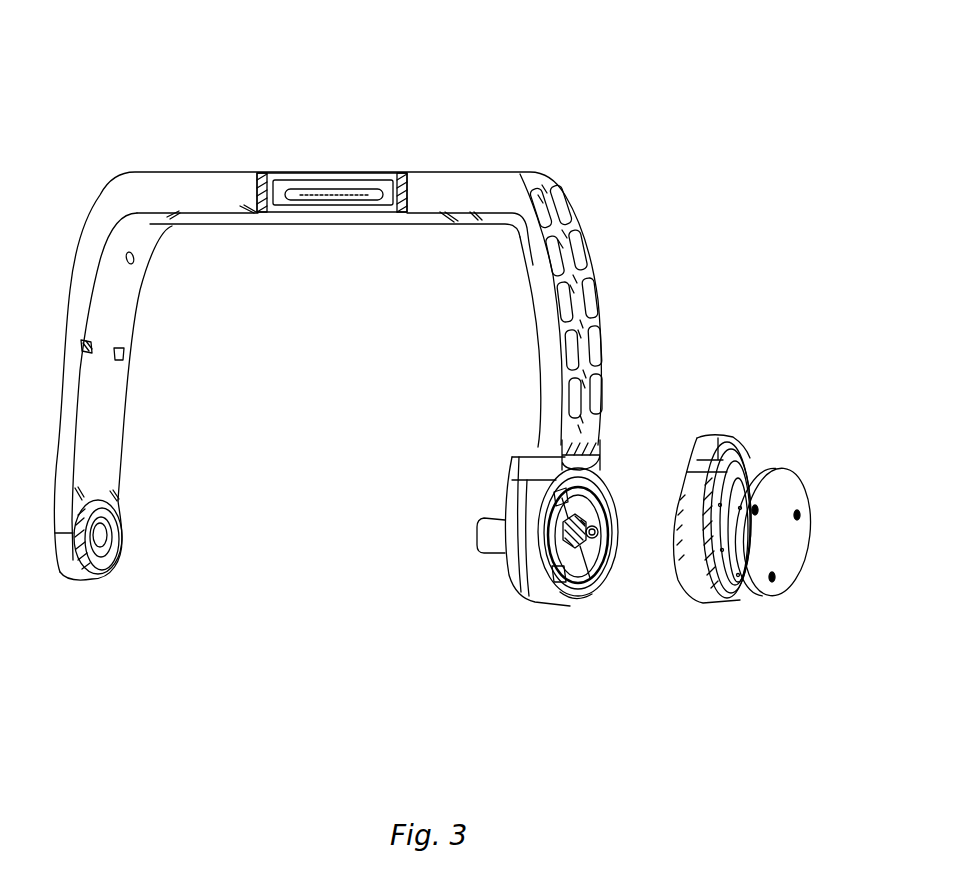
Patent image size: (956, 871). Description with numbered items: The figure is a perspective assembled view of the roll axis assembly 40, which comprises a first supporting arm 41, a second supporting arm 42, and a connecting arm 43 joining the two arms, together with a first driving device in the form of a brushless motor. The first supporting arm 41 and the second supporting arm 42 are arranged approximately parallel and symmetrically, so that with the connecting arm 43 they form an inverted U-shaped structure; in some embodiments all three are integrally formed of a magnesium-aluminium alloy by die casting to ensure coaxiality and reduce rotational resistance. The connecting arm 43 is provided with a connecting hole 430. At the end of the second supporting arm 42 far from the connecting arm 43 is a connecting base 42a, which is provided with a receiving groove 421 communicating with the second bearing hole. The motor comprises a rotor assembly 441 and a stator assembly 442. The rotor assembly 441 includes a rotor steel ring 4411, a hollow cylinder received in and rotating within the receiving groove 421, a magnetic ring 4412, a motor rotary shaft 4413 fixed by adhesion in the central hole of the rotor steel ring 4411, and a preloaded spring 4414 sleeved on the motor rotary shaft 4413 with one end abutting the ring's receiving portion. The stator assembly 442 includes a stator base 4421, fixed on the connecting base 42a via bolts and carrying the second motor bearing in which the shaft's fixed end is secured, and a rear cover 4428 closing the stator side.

The roll axis assembly 40 is at (384, 36).
The first supporting arm 41 is at (77, 323).
The second supporting arm 42 is at (543, 283).
The connecting base 42a is at (544, 464).
The connecting arm 43 is at (228, 184).
The connecting hole 430 is at (340, 223).
The receiving groove 421 is at (607, 480).
The rotor assembly 441 is at (630, 495).
The stator assembly 442 is at (770, 424).
The rotor steel ring 4411 is at (596, 596).
The magnetic ring 4412 is at (590, 558).
The motor rotary shaft 4413 is at (490, 537).
The preloaded spring 4414 is at (577, 597).
The stator base 4421 is at (703, 575).
The rear cover 4428 is at (797, 553).